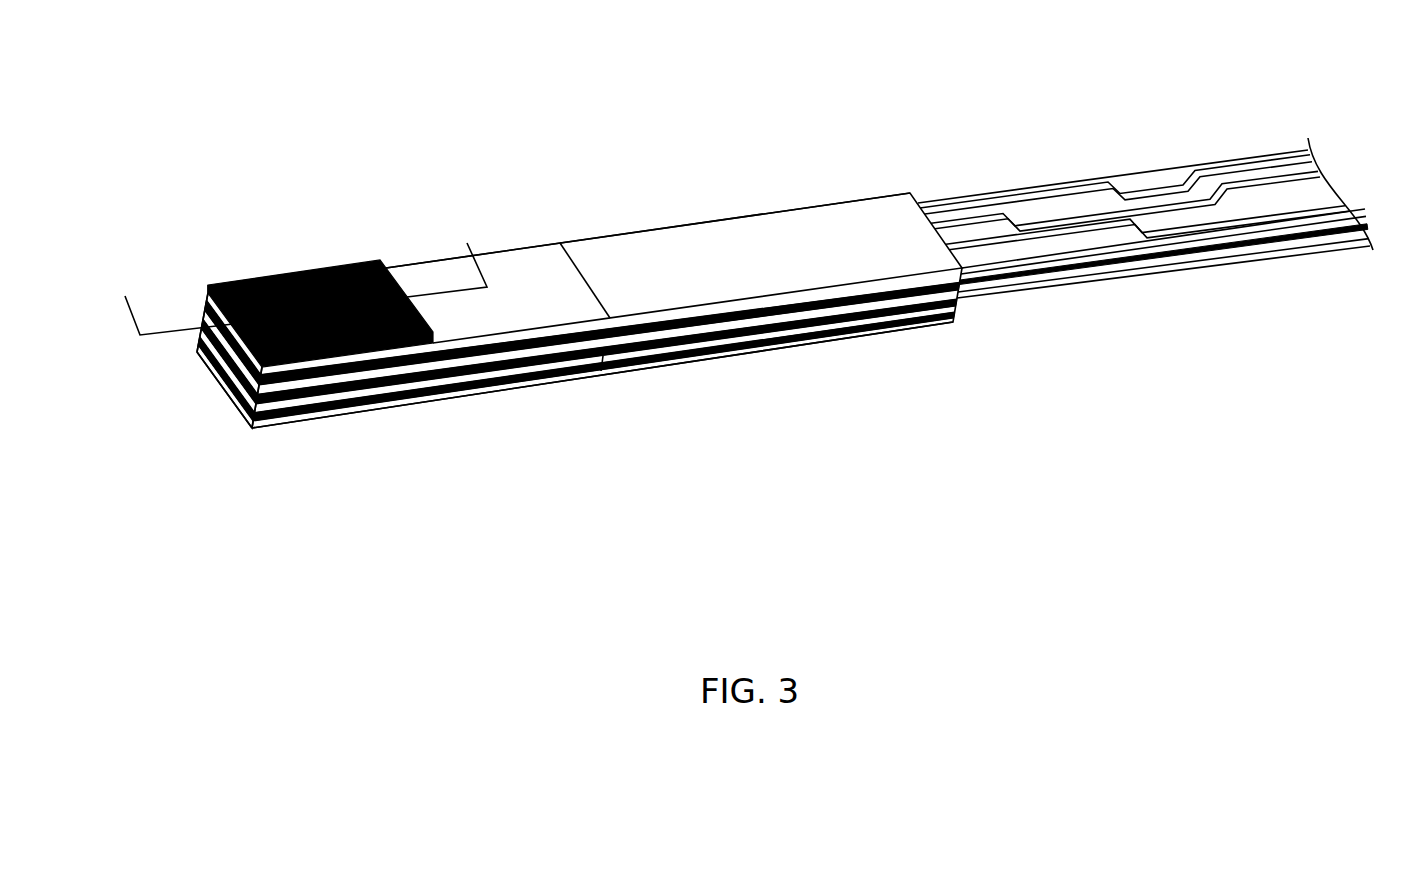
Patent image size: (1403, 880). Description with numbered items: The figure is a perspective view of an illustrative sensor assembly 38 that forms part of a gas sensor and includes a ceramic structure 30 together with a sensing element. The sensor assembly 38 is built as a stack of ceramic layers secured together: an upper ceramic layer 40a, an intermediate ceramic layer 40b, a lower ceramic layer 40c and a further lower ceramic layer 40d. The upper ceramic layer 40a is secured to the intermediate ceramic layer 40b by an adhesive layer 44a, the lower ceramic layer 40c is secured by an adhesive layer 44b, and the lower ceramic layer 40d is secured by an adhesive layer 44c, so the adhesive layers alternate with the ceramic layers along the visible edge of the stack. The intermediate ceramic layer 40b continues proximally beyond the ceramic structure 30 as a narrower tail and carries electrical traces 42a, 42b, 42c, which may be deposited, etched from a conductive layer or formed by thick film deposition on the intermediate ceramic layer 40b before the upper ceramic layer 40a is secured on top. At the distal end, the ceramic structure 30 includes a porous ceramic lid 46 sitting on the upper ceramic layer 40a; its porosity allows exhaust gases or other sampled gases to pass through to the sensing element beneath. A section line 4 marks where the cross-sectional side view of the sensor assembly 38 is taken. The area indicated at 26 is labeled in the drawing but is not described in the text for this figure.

The section line 4- 4 is at (296, 274).
The sensor assembly 26 is at (262, 258).
The ceramic structure 30 is at (553, 400).
The sensor assembly 38 is at (1005, 85).
The upper ceramic layer 40a is at (918, 284).
The intermediate ceramic layer 40b is at (842, 312).
The lower ceramic layer 40c is at (752, 345).
The lower ceramic layer 40d is at (663, 360).
The electrical trace 42a is at (1247, 168).
The electrical trace 42b is at (1307, 188).
The electrical trace 42c is at (1260, 222).
The adhesive layer 44a is at (438, 364).
The adhesive layer 44b is at (372, 391).
The adhesive layer 44c is at (302, 412).
The porous ceramic lid 46 is at (343, 265).